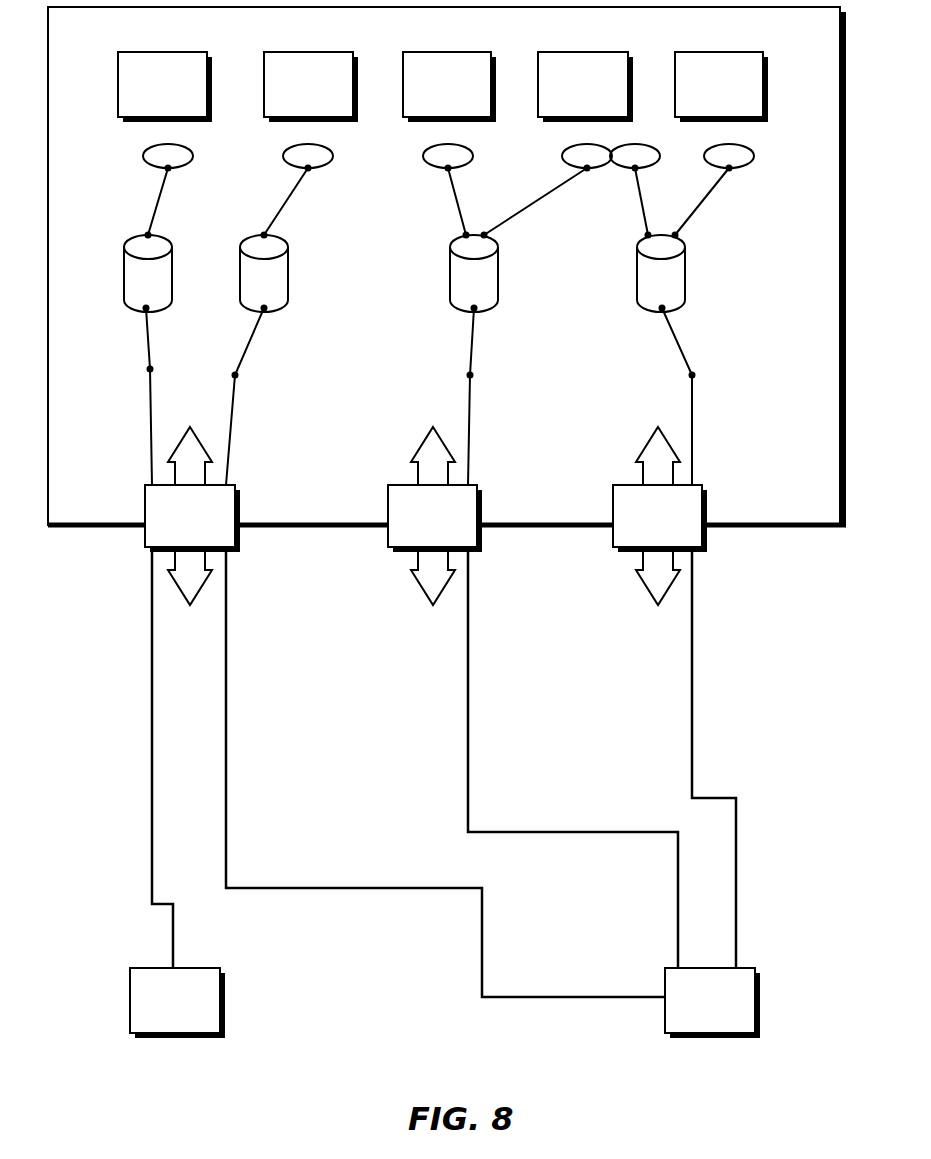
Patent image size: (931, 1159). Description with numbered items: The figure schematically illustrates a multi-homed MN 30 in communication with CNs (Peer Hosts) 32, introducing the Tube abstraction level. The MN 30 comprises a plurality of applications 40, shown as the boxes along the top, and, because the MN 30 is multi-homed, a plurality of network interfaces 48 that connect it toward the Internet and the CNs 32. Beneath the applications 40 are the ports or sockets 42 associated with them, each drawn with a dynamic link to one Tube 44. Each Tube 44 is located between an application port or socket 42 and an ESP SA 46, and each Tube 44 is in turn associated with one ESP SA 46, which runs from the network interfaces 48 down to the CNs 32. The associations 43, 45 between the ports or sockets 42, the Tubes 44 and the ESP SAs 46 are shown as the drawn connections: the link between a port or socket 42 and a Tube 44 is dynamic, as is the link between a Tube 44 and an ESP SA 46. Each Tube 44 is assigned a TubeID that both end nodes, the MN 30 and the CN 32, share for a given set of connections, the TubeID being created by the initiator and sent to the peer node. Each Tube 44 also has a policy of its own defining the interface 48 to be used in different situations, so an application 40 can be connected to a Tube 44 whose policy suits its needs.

The multi-homed MN 30 is at (786, 527).
The CN (Peer Host) 32 is at (227, 998).
The application 40 is at (309, 51).
The port or socket 42 is at (192, 157).
The port-tube association 43 is at (158, 203).
The Tube 44 is at (288, 272).
The tube-SA association 45 is at (148, 338).
The ESP SA 46 is at (468, 648).
The network interface 48 is at (116, 584).